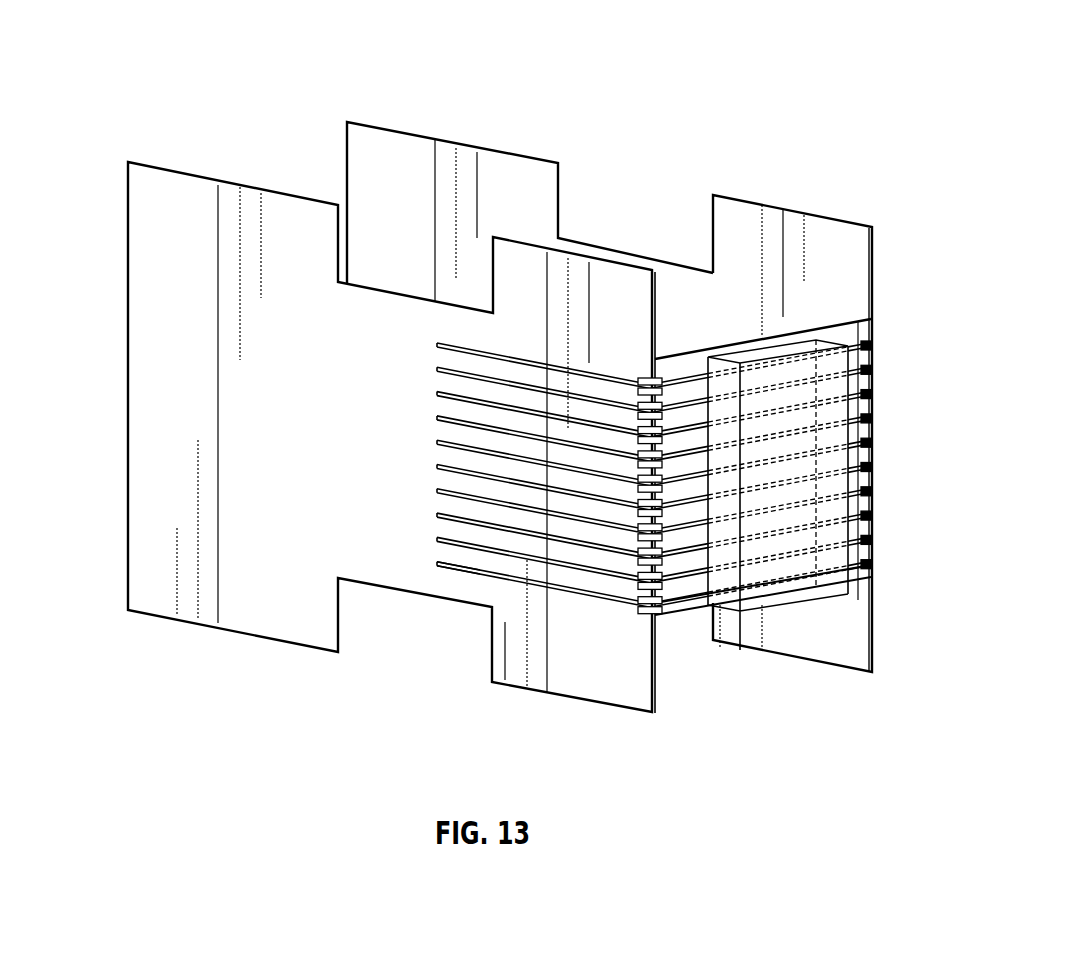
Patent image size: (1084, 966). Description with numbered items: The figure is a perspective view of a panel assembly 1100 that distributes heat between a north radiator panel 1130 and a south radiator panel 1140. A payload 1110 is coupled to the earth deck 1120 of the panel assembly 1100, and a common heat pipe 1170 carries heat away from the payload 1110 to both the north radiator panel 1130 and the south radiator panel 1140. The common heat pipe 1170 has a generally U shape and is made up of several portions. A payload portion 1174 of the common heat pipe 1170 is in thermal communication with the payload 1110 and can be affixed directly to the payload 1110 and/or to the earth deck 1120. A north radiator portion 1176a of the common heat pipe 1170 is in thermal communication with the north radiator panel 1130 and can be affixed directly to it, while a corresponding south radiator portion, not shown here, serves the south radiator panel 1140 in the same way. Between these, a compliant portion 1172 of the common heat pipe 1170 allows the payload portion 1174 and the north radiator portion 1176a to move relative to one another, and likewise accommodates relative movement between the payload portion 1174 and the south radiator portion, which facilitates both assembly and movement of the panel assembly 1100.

The panel assembly 1100 is at (147, 83).
The north radiator panel 1130 is at (155, 208).
The south radiator panel 1140 is at (820, 252).
The earth deck 1120 is at (852, 335).
The payload 1110 is at (820, 338).
The common heat pipe 1170 is at (707, 610).
The compliant portion 1172 is at (866, 565).
The payload portion 1174 is at (693, 600).
The north radiator portion 1176a is at (475, 573).